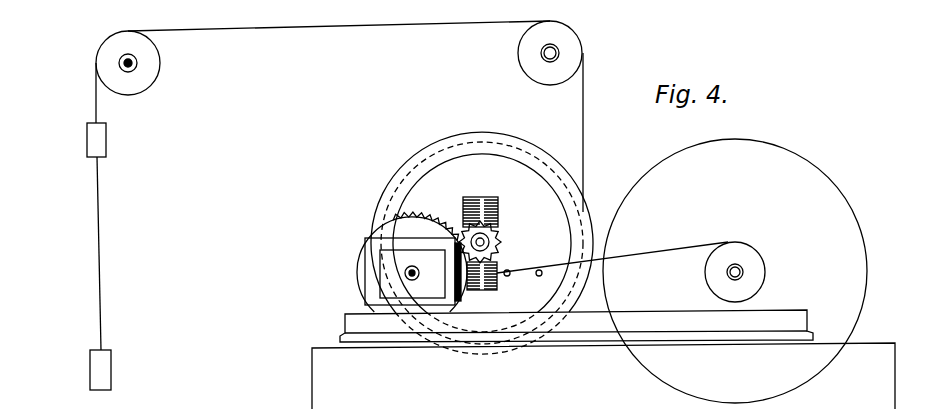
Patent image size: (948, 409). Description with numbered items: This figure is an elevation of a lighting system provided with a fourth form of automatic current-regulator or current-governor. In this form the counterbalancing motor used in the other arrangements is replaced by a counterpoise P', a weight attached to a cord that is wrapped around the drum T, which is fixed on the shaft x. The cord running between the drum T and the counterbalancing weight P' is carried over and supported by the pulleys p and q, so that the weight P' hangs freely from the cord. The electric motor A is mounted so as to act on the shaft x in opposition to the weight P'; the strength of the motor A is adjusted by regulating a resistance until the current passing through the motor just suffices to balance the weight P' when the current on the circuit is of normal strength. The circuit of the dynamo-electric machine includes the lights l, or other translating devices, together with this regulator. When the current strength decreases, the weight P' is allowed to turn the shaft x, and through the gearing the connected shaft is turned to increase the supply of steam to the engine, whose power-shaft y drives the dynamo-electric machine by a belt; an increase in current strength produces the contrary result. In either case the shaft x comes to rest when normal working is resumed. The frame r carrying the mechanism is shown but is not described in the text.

The pulley p is at (135, 63).
The pulley q is at (547, 53).
The counterpoise P' is at (112, 226).
The drum T is at (482, 243).
The frame with sector wheel r is at (412, 262).
The lights l is at (405, 275).
The shaft x is at (500, 235).
The electric motor A is at (488, 241).
The power-shaft y is at (743, 272).